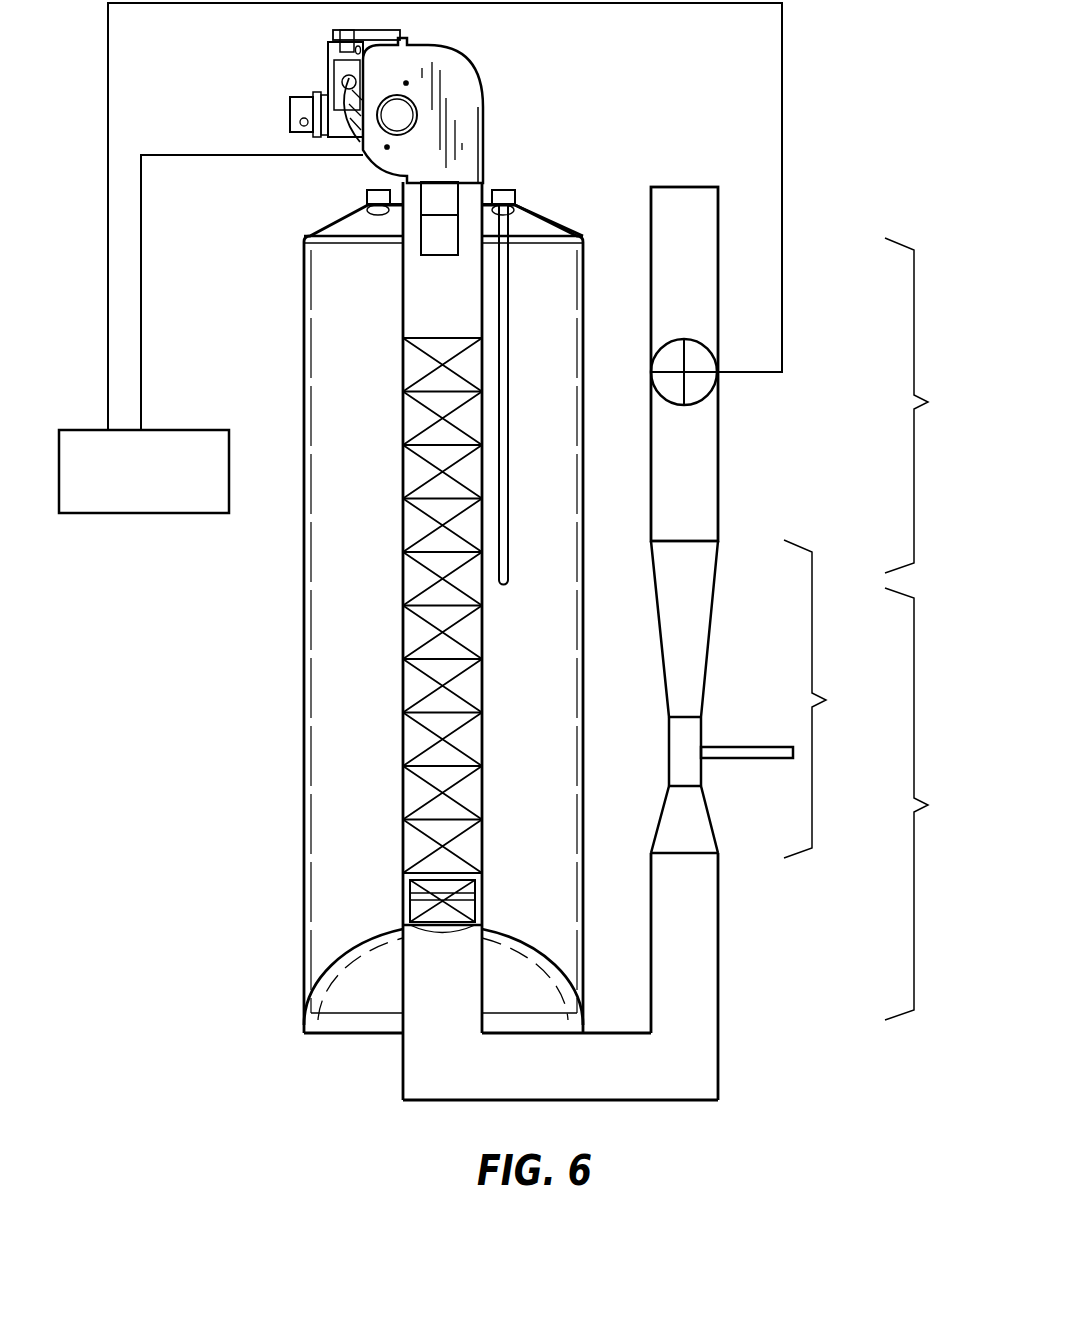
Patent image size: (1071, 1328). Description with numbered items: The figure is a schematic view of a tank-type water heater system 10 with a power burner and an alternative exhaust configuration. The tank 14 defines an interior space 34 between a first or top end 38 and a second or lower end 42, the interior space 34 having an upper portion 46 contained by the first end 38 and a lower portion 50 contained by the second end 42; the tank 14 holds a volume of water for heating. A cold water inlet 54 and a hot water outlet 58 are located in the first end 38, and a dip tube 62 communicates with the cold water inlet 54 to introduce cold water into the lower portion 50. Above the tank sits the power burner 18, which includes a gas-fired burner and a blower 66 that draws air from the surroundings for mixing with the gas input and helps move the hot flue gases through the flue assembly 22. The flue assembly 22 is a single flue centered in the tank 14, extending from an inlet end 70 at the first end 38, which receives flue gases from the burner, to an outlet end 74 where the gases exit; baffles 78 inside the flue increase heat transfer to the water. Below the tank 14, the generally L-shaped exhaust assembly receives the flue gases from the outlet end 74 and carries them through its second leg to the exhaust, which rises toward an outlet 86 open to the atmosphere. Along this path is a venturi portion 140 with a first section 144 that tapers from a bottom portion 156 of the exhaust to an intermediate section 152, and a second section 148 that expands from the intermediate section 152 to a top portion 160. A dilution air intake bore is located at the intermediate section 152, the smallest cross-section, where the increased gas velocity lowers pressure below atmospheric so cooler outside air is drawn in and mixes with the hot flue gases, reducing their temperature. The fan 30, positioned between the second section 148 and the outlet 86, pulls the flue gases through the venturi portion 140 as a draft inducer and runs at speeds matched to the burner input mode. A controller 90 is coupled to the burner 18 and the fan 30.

The water heater system 10 is at (554, 100).
The tank 14 is at (303, 690).
The power burner 18 is at (484, 128).
The flue assembly 22 is at (403, 288).
The fan 30 is at (708, 392).
The interior space 34 is at (375, 455).
The first end 38 is at (550, 218).
The second end 42 is at (375, 990).
The upper portion 46 is at (922, 405).
The lower portion 50 is at (922, 804).
The cold water inlet 54 is at (505, 189).
The hot water outlet 58 is at (388, 189).
The dip tube 62 is at (508, 422).
The blower 66 is at (330, 53).
The inlet end 70 is at (405, 221).
The outlet end 74 is at (412, 885).
The baffles 78 is at (435, 562).
The outlet 86 is at (690, 186).
The controller 90 is at (88, 430).
The venturi portion 140 is at (828, 699).
The first section 144 is at (668, 817).
The second section 148 is at (662, 620).
The intermediate section 152 is at (675, 747).
The bottom portion 156 is at (706, 962).
The top portion 160 is at (690, 272).